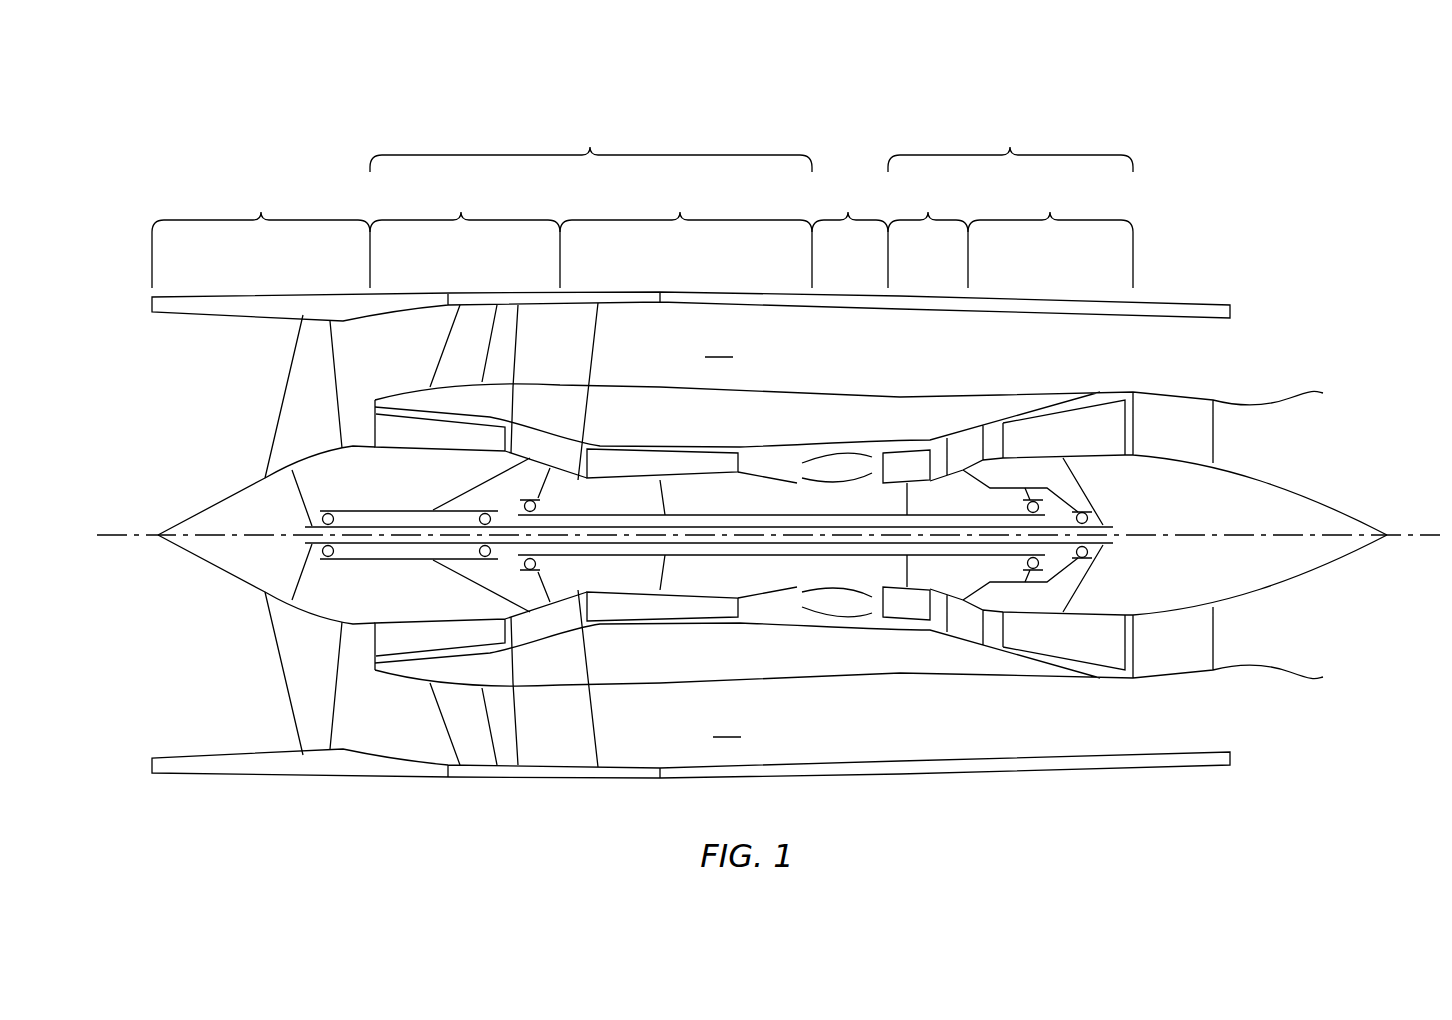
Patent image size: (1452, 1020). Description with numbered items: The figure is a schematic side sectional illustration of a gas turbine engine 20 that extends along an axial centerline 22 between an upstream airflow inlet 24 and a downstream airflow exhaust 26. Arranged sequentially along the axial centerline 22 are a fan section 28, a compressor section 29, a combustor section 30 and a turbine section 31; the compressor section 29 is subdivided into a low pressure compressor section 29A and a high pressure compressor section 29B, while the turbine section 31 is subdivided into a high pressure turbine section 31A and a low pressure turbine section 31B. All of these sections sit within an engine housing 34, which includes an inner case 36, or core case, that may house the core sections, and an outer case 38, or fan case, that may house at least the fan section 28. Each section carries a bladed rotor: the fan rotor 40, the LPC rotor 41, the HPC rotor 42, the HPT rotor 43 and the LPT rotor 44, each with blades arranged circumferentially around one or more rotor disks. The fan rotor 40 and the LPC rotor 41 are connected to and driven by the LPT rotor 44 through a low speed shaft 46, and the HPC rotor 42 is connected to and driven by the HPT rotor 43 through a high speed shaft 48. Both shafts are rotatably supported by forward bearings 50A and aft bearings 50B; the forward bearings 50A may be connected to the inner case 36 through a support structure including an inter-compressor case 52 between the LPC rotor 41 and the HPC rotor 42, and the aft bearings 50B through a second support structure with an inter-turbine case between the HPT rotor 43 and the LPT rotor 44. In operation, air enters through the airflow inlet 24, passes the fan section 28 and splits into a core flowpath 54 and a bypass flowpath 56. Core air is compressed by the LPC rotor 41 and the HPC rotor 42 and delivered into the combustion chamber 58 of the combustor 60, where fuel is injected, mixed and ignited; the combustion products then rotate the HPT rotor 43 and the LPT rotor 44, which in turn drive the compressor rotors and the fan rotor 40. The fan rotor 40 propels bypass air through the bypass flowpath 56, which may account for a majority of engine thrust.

The gas turbine engine 20 is at (185, 160).
The axial centerline 22 is at (103, 533).
The airflow inlet 24 is at (152, 372).
The airflow exhaust 26 is at (1333, 442).
The fan section 28 is at (261, 470).
The compressor section 29 is at (591, 145).
The low pressure compressor section 29A is at (465, 236).
The high pressure compressor section 29B is at (686, 236).
The combustor section 30 is at (850, 236).
The turbine section 31 is at (1010, 145).
The high pressure turbine section 31A is at (928, 236).
The low pressure turbine section 31B is at (1050, 236).
The engine housing 34 is at (378, 783).
The inner case 36 is at (697, 625).
The outer case 38 is at (597, 782).
The fan rotor 40 is at (250, 582).
The low pressure compressor rotor 41 is at (373, 625).
The high pressure compressor rotor 42 is at (665, 573).
The high pressure turbine rotor 43 is at (912, 573).
The low pressure turbine rotor 44 is at (1085, 585).
The low speed shaft 46 is at (760, 522).
The high speed shaft 48 is at (792, 515).
The forward bearings 50A is at (505, 505).
The aft bearings 50B is at (1095, 520).
The inter-compressor case 52 is at (565, 430).
The core flowpath 54 is at (775, 458).
The bypass flowpath 56 is at (723, 536).
The combustion chamber 58 is at (823, 472).
The combustor 60 is at (842, 452).